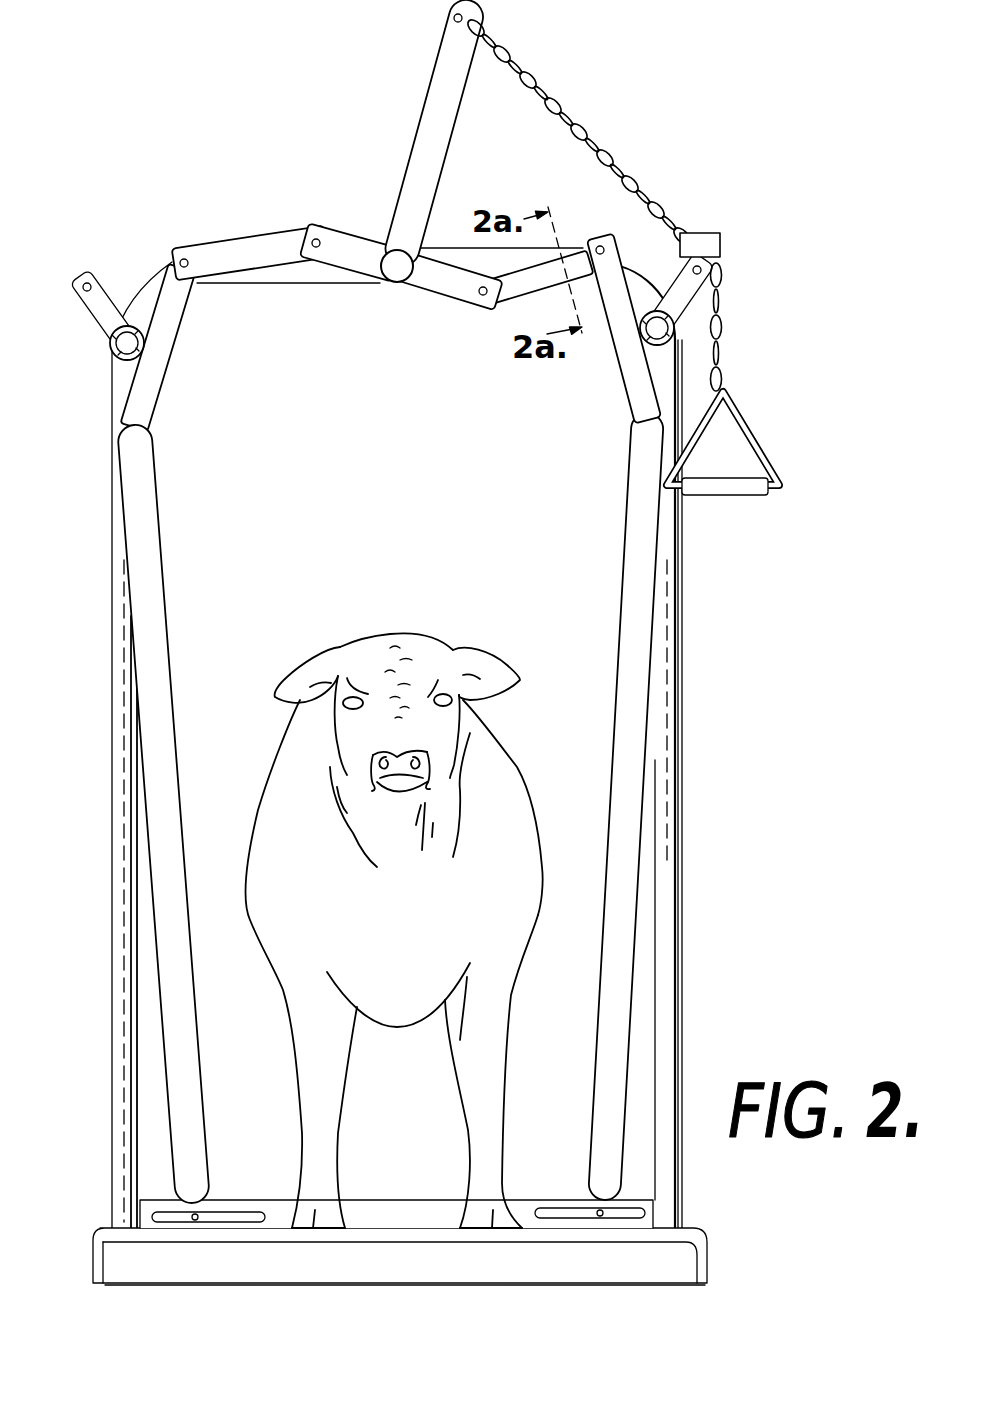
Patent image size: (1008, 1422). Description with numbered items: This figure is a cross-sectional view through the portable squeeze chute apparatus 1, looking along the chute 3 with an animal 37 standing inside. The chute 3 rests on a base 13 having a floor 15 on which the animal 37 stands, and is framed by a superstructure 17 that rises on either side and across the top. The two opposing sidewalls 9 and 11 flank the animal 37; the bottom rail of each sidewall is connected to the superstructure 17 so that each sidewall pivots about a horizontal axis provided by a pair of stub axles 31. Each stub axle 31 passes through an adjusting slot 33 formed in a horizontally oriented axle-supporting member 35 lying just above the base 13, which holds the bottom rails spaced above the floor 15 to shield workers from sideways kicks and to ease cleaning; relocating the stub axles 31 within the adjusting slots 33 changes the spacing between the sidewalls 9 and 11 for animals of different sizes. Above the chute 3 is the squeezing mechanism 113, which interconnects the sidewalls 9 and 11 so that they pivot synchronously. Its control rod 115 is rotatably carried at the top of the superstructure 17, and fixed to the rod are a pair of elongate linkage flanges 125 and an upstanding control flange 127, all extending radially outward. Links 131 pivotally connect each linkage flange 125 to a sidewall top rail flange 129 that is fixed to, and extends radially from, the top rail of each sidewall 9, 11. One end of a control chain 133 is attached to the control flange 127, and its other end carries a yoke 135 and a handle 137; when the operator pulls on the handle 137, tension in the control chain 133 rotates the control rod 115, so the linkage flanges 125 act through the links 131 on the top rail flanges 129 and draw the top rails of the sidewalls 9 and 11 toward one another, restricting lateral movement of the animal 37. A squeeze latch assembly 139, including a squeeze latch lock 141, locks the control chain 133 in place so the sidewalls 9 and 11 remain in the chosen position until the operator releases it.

The portable squeeze chute apparatus 1 is at (694, 132).
The chute 3 is at (690, 683).
The sidewall 9 is at (637, 920).
The sidewall 11 is at (159, 993).
The base 13 is at (420, 1285).
The floor 15 is at (370, 1237).
The superstructure 17 is at (683, 777).
The stub axle 31 is at (600, 1213).
The adjusting slot 33 is at (230, 1223).
The axle-supporting member 35 is at (655, 1203).
The animal 37 is at (405, 633).
The squeezing mechanism 113 is at (416, 211).
The control rod 115 is at (392, 283).
The linkage flange 125 is at (458, 308).
The control flange 127 is at (458, 124).
The sidewall top rail flange 129 is at (167, 388).
The link 131 is at (266, 230).
The control chain 133 is at (554, 100).
The yoke 135 is at (760, 440).
The handle 137 is at (727, 497).
The squeeze latch assembly 139 is at (685, 281).
The squeeze latch lock 141 is at (717, 233).